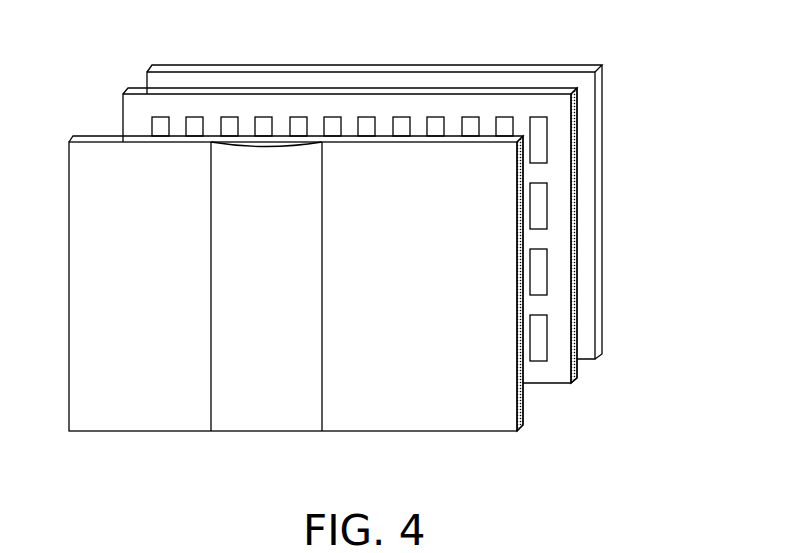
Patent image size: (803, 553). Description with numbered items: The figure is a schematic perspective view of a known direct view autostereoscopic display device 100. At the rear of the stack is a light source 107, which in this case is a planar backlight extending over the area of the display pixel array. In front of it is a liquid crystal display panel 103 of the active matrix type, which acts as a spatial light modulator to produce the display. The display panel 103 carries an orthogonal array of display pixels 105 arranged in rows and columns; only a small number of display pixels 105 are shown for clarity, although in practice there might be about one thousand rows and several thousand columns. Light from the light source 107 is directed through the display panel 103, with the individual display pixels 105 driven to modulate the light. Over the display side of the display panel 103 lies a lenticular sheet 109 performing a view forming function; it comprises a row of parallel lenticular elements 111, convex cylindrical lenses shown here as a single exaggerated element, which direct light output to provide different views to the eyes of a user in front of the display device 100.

The autostereoscopic display device 100 is at (77, 71).
The liquid crystal display panel 103 is at (574, 373).
The display pixels 105 is at (545, 158).
The light source 107 is at (595, 342).
The lenticular sheet 109 is at (518, 417).
The lenticular elements 111 is at (269, 423).